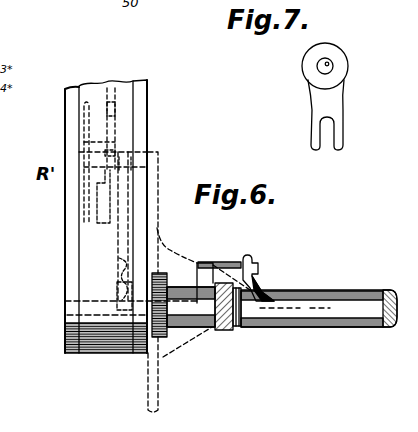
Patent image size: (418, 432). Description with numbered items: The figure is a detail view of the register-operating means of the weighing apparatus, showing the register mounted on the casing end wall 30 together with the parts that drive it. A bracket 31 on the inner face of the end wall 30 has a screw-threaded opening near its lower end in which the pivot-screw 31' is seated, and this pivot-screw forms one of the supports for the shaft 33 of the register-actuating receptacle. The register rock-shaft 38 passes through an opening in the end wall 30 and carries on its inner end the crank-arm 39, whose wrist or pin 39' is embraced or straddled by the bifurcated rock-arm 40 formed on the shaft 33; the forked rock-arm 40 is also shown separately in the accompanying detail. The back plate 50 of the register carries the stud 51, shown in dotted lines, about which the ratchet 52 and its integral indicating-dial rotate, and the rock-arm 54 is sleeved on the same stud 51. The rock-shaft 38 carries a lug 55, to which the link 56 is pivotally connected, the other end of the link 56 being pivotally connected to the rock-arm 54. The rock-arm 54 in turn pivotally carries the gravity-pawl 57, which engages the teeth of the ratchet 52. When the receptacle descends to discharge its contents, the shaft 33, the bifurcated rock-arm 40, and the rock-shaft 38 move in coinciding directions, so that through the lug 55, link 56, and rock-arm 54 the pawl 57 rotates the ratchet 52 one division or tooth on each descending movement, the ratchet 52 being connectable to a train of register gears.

In FIG. 6, the end wall 30 is at (160, 229).
In FIG. 6, the bracket 31 is at (199, 271).
In FIG. 6, the pivot-screw 31' is at (275, 284).
In FIG. 6, the shaft 33 is at (80, 126).
In FIG. 7, the shaft 33 is at (305, 66).
In FIG. 6, the rock-shaft 38 is at (92, 300).
In FIG. 6, the crank-arm 39 is at (204, 324).
In FIG. 6, the wrist or pin 39' is at (231, 251).
In FIG. 6, the bifurcated rock-arm 40 is at (252, 277).
In FIG. 7, the bifurcated rock-arm 40 is at (333, 108).
In FIG. 6, the back plate 50 is at (149, 134).
In FIG. 6, the stud 51 is at (120, 153).
In FIG. 6, the ratchet 52 is at (112, 114).
In FIG. 6, the rock-arm 54 is at (132, 217).
In FIG. 6, the lug 55 is at (124, 295).
In FIG. 6, the link 56 is at (121, 270).
In FIG. 6, the gravity-pawl 57 is at (99, 209).